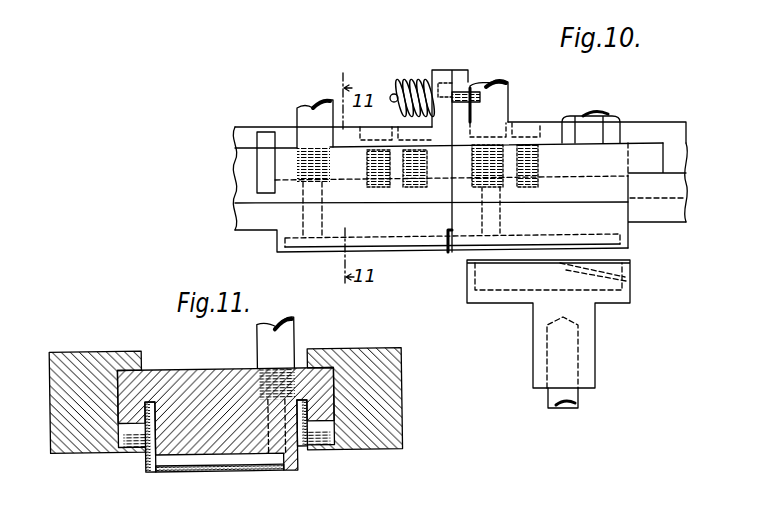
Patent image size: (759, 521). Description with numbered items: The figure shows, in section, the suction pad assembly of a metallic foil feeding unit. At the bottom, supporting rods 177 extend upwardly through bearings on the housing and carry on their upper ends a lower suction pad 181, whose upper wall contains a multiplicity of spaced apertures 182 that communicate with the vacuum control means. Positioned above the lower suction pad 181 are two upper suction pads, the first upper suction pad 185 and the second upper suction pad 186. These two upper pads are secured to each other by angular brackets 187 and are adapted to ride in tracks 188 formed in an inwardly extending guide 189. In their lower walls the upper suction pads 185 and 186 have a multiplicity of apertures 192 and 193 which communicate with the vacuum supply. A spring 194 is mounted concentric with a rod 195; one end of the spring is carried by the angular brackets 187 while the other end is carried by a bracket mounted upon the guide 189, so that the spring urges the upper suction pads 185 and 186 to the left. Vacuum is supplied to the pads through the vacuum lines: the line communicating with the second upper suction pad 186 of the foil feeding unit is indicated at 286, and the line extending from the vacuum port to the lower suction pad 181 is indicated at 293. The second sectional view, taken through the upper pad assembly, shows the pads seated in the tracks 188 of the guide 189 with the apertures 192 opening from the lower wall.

In FIG. 10, the supporting rods 177 is at (577, 395).
In FIG. 10, the lower suction pad 181 is at (583, 312).
In FIG. 10, the spaced apertures 182 is at (630, 277).
In FIG. 10, the first upper suction pad 185 is at (287, 228).
In FIG. 11, the first upper suction pad 185 is at (162, 447).
In FIG. 10, the second upper suction pad 186 is at (620, 227).
In FIG. 10, the angular brackets 187 is at (455, 70).
In FIG. 10, the tracks 188 is at (672, 172).
In FIG. 11, the tracks 188 is at (125, 424).
In FIG. 10, the guide 189 is at (650, 122).
In FIG. 11, the guide 189 is at (88, 350).
In FIG. 10, the apertures 192 is at (333, 252).
In FIG. 11, the apertures 192 is at (216, 473).
In FIG. 10, the apertures 193 is at (468, 250).
In FIG. 10, the spring 194 is at (436, 69).
In FIG. 10, the rod 195 is at (402, 86).
In FIG. 10, the vacuum line connection 286 is at (500, 100).
In FIG. 10, the vacuum line connection 293 is at (297, 108).
In FIG. 11, the vacuum line connection 293 is at (272, 345).